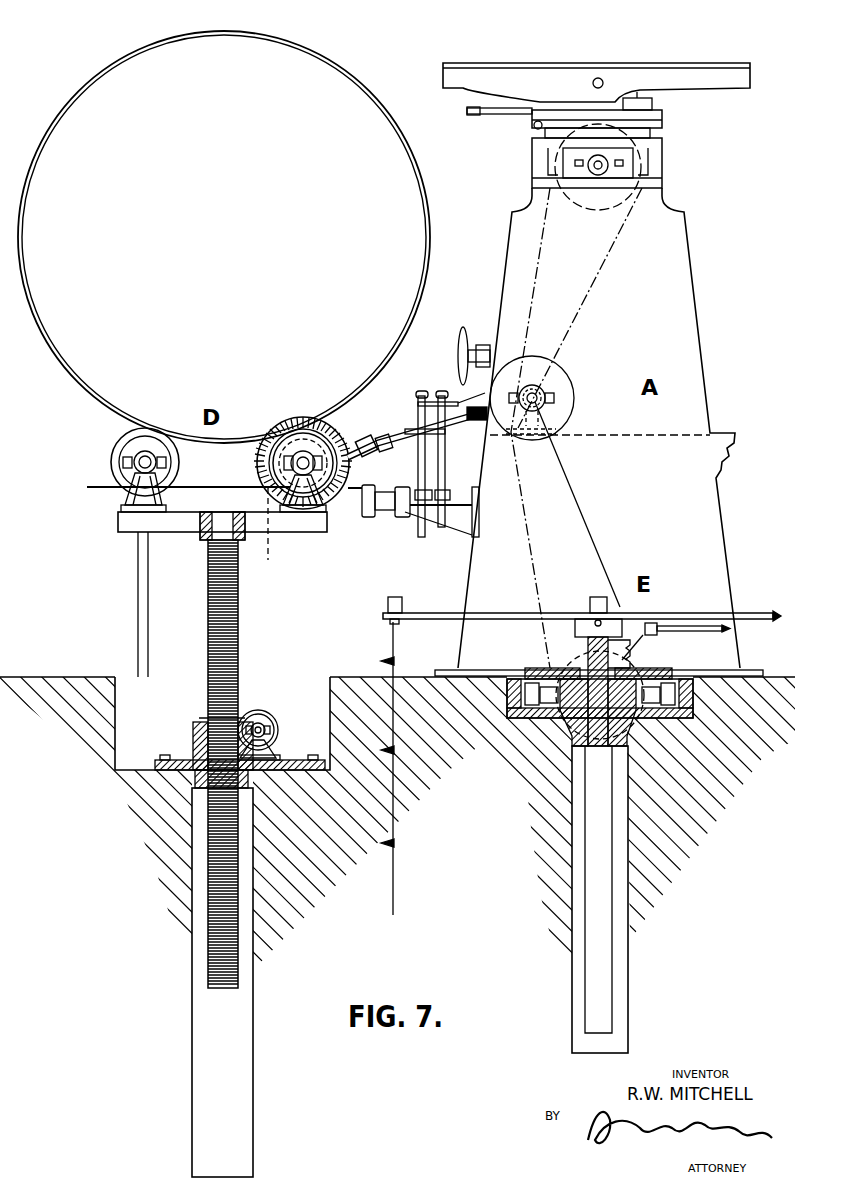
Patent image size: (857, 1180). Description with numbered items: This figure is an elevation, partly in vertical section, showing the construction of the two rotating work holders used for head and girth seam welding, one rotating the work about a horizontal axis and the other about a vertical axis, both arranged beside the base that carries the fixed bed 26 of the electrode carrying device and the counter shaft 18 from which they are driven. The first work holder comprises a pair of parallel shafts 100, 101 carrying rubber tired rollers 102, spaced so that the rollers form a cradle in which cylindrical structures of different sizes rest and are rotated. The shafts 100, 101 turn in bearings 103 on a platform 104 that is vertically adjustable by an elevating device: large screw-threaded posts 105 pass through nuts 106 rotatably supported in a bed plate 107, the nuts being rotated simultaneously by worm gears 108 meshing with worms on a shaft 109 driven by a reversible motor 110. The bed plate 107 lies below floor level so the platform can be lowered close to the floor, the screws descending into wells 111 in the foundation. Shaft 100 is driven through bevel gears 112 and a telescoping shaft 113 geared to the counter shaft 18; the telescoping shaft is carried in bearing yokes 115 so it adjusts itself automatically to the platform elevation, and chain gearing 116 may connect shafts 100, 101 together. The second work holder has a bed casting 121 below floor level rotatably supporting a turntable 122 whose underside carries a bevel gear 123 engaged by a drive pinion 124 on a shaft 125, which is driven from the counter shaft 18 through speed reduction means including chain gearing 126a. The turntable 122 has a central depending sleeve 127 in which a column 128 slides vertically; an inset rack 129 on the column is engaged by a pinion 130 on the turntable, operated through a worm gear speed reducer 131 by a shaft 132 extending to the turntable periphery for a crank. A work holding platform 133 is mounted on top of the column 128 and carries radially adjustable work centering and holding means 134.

The counter shaft 18 is at (556, 364).
The bed 26 is at (665, 164).
The shaft 100 is at (270, 433).
The shaft 101 is at (134, 461).
The rubber tired rollers 102 is at (113, 460).
The bearings 103 is at (133, 467).
The platform 104 is at (132, 522).
The screw-threaded posts 105 is at (240, 636).
The nuts 106 is at (272, 748).
The bed plate 107 is at (194, 758).
The worm gears 108 is at (197, 722).
The shaft 109 is at (265, 722).
The reversible motor 110 is at (258, 710).
The wells 111 is at (199, 718).
The bevel gears 112 is at (333, 423).
The telescoping shaft 113 is at (386, 436).
The bearing yokes 115 is at (366, 438).
The chain gearing 116 is at (277, 535).
The bed casting 121 is at (530, 718).
The turntable 122 is at (525, 668).
The bevel gear 123 is at (566, 664).
The drive pinion 124 is at (552, 748).
The shaft 125 is at (556, 785).
The chain gearing 126a is at (592, 535).
The central depending sleeve 127 is at (633, 742).
The column 128 is at (600, 898).
The inset rack 129 is at (640, 668).
The pinion 130 is at (633, 649).
The worm gear speed reducer 131 is at (645, 623).
The shaft 132 is at (732, 630).
The work holding platform 133 is at (512, 613).
The work centering and holding means 134 is at (405, 597).